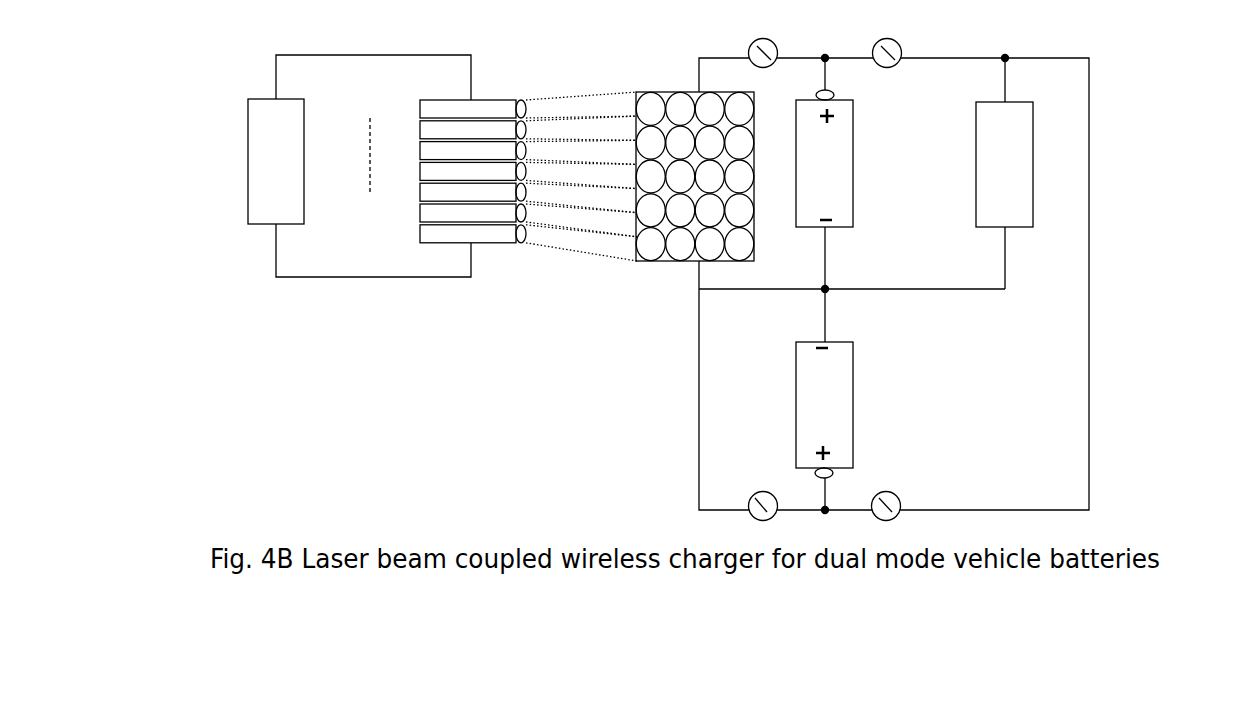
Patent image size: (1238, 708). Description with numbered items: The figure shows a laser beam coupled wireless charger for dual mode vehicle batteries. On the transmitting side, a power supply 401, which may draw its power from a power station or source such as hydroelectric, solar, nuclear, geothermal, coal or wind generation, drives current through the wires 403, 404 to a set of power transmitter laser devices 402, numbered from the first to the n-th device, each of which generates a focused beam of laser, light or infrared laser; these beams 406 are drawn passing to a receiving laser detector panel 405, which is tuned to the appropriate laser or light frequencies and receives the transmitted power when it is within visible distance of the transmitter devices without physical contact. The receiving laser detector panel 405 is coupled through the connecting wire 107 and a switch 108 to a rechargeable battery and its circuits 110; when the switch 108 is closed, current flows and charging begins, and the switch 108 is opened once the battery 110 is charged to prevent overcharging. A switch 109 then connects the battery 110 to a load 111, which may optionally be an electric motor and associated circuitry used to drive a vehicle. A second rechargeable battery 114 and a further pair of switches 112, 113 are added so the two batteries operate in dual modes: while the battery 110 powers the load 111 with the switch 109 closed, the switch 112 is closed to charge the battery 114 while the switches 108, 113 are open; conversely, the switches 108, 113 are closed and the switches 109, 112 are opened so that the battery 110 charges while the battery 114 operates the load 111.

The power supply 401 is at (258, 133).
The power transmitter laser devices 402 is at (436, 162).
The wire 403 is at (392, 55).
The wire 404 is at (372, 277).
The receiving laser detector panel 405 is at (665, 263).
The laser beams 406 is at (605, 100).
The connecting wire 107 is at (710, 57).
The switch 108 is at (765, 45).
The switch 109 is at (890, 45).
The rechargeable battery and its circuits 110 is at (800, 198).
The load 111 is at (983, 175).
The switch 112 is at (772, 493).
The switch 113 is at (897, 493).
The rechargeable battery 114 is at (805, 408).